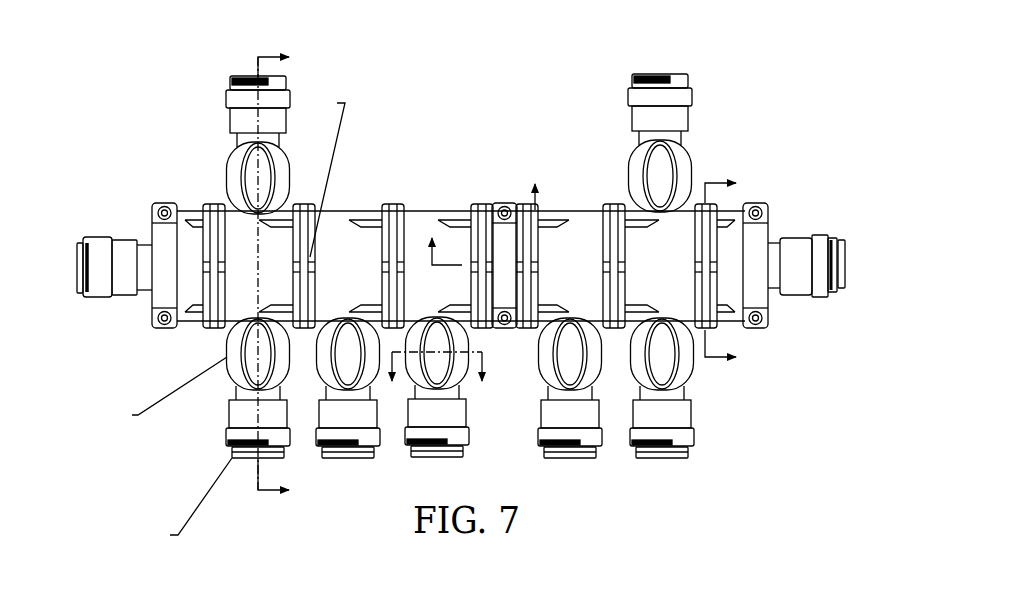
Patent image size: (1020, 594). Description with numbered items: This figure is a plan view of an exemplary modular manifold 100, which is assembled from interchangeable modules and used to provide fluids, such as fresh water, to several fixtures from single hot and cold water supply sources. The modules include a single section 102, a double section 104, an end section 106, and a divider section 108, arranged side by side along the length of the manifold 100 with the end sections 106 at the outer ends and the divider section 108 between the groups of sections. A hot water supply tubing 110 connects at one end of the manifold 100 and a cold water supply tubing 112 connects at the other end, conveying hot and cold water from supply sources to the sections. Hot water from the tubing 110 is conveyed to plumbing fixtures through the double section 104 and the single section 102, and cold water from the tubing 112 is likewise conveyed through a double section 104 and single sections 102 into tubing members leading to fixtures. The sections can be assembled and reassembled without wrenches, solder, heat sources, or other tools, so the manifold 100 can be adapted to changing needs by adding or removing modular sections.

The modular manifold 100 is at (488, 76).
The single section 102 is at (338, 258).
The double section 104 is at (233, 173).
The end section 106 is at (153, 217).
The divider section 108 is at (504, 202).
The hot water supply tubing 110 is at (80, 247).
The cold water supply tubing 112 is at (828, 232).